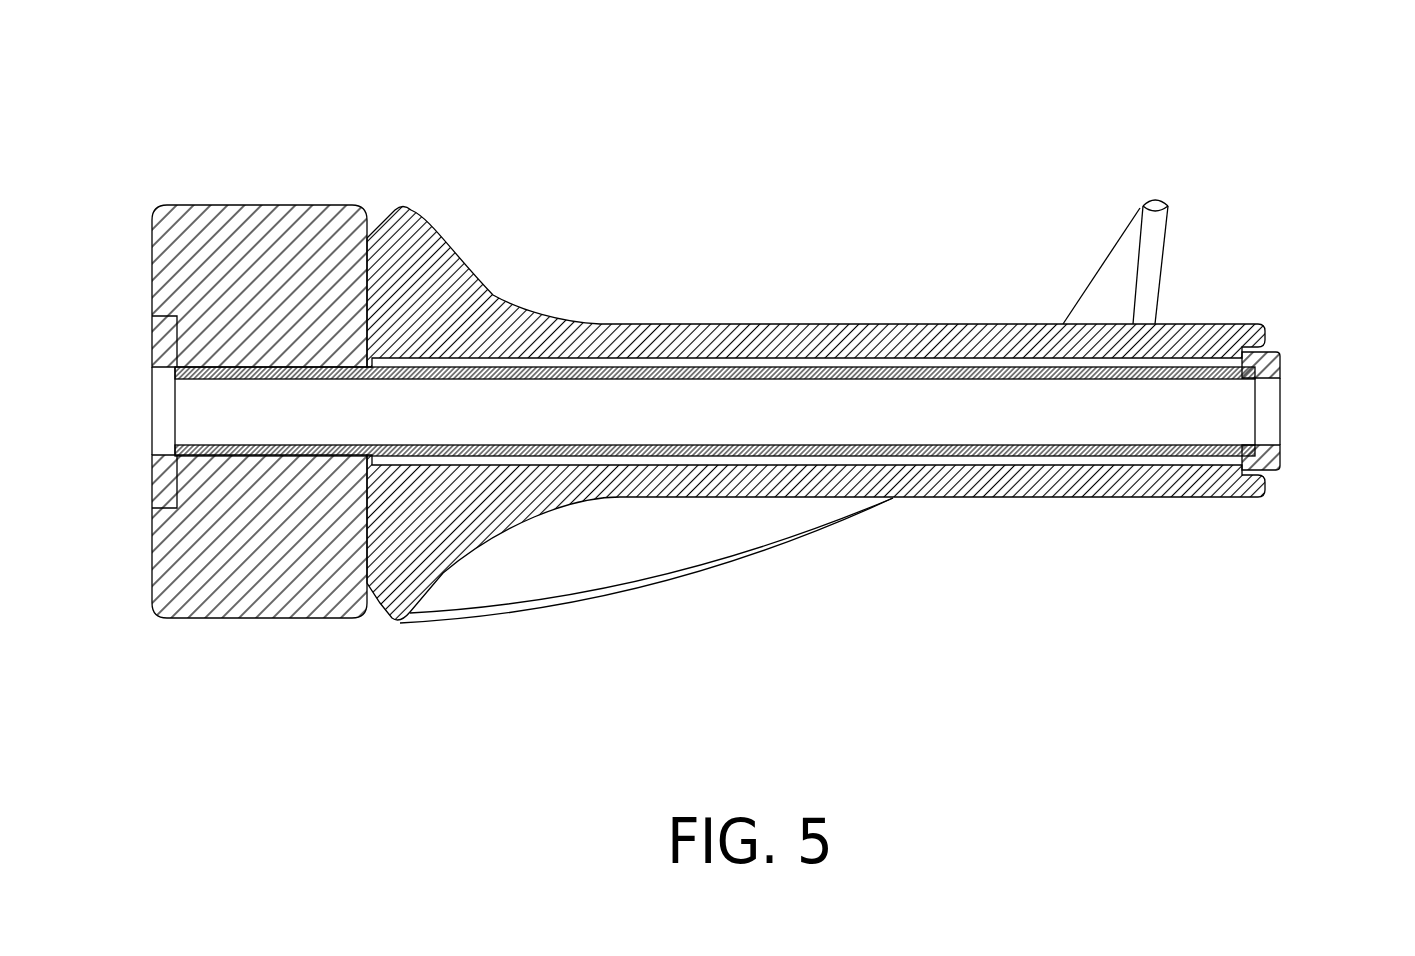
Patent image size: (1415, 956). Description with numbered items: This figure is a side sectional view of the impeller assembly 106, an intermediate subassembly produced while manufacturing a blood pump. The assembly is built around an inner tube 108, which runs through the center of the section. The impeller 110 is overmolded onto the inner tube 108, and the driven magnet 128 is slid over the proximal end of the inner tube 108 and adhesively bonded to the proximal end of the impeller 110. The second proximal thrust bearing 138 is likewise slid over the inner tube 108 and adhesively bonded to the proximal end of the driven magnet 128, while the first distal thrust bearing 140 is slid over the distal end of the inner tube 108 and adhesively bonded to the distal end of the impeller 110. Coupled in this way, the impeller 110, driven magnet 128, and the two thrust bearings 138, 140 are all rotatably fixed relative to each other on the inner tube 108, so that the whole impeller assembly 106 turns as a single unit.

The impeller assembly 106 is at (358, 90).
The inner tube 108 is at (775, 367).
The impeller 110 is at (665, 325).
The driven magnet 128 is at (258, 205).
The second proximal thrust bearing 138 is at (152, 325).
The first distal thrust bearing 140 is at (1283, 366).